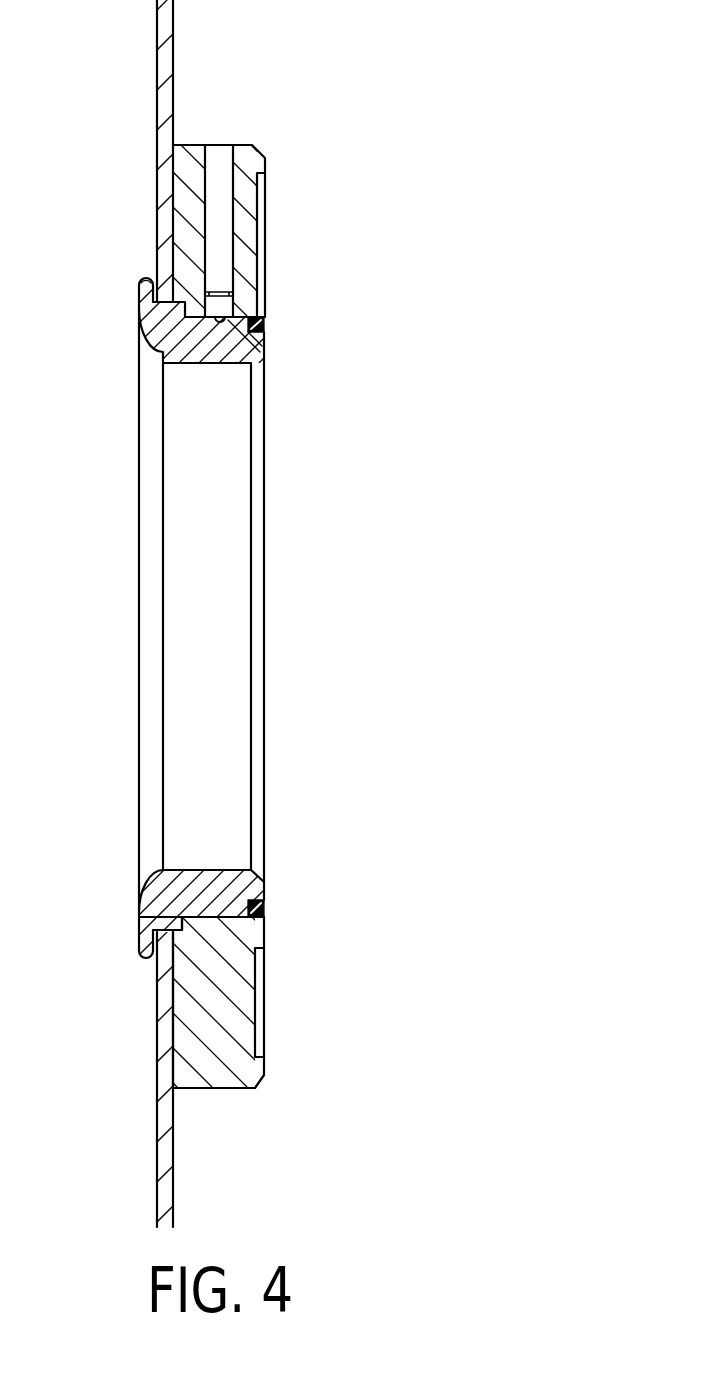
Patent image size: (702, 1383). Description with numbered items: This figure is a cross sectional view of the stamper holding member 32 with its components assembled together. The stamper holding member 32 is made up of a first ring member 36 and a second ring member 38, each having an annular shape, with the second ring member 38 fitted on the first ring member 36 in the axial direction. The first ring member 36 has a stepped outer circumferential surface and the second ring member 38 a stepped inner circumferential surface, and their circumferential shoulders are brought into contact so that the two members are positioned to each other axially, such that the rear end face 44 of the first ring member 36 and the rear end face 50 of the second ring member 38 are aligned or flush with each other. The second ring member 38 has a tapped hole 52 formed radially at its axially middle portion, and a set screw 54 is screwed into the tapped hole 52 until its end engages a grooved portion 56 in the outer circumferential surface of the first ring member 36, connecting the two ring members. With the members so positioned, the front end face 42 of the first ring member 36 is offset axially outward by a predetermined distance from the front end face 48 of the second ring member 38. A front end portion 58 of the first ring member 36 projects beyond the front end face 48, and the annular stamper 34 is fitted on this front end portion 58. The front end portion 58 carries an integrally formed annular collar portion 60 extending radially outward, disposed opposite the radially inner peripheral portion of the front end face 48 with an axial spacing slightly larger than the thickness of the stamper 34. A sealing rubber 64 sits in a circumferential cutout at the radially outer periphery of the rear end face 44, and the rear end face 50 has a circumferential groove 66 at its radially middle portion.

The stamper holding member 32 is at (223, 613).
The annular stamper 34 is at (160, 1143).
The first ring member 36 is at (199, 596).
The second ring member 38 is at (215, 1020).
The front end face 42 is at (160, 353).
The rear end face 44 is at (265, 888).
The front end face 48 is at (170, 178).
The rear end face 50 is at (214, 181).
The tapped hole 52 is at (208, 166).
The set screw 54 is at (221, 285).
The grooved portion 56 is at (264, 363).
The front end portion 58 is at (167, 922).
The annular collar portion 60 is at (139, 290).
The sealing rubber 64 is at (265, 910).
The circumferential groove 66 is at (255, 1003).